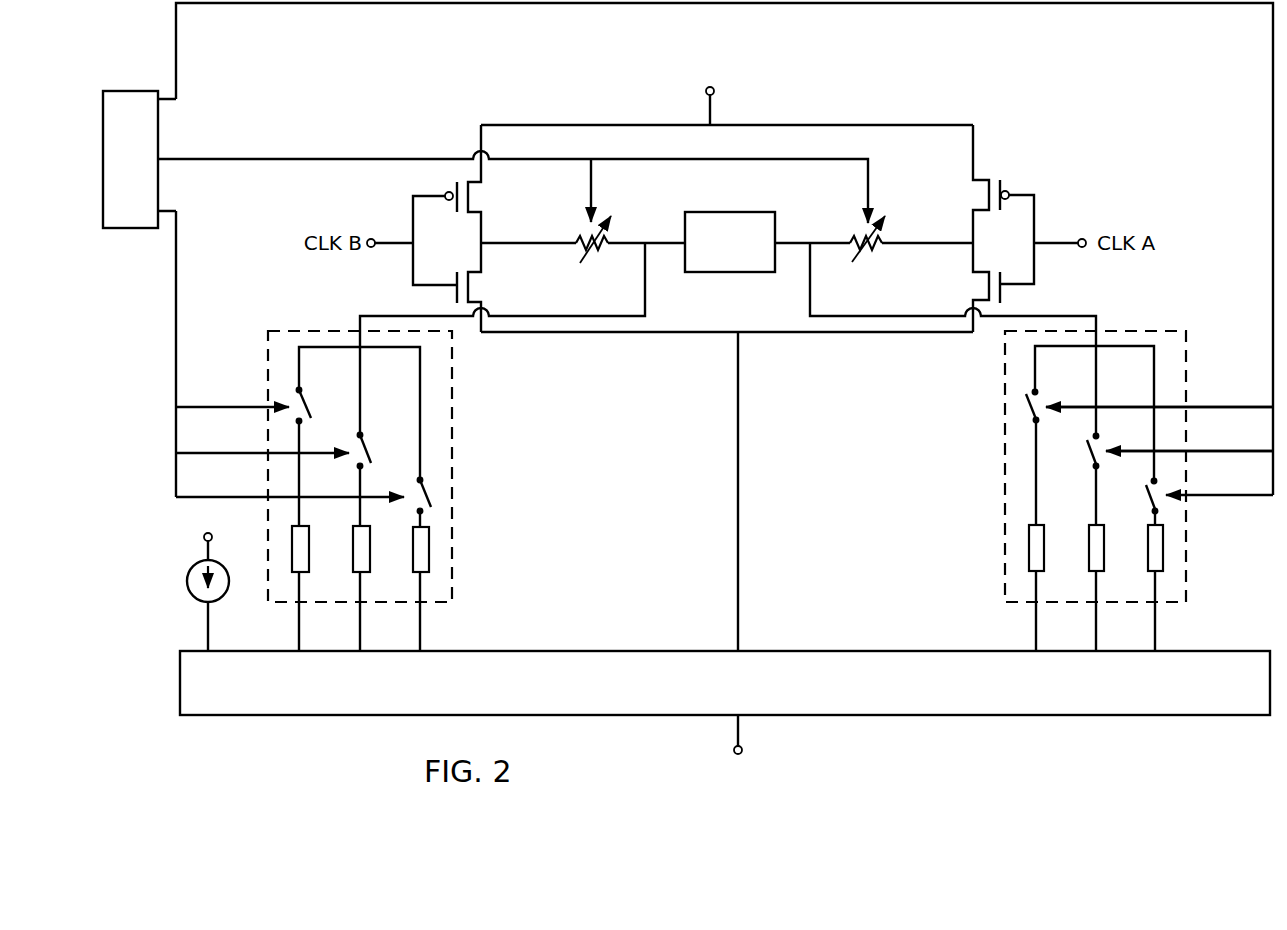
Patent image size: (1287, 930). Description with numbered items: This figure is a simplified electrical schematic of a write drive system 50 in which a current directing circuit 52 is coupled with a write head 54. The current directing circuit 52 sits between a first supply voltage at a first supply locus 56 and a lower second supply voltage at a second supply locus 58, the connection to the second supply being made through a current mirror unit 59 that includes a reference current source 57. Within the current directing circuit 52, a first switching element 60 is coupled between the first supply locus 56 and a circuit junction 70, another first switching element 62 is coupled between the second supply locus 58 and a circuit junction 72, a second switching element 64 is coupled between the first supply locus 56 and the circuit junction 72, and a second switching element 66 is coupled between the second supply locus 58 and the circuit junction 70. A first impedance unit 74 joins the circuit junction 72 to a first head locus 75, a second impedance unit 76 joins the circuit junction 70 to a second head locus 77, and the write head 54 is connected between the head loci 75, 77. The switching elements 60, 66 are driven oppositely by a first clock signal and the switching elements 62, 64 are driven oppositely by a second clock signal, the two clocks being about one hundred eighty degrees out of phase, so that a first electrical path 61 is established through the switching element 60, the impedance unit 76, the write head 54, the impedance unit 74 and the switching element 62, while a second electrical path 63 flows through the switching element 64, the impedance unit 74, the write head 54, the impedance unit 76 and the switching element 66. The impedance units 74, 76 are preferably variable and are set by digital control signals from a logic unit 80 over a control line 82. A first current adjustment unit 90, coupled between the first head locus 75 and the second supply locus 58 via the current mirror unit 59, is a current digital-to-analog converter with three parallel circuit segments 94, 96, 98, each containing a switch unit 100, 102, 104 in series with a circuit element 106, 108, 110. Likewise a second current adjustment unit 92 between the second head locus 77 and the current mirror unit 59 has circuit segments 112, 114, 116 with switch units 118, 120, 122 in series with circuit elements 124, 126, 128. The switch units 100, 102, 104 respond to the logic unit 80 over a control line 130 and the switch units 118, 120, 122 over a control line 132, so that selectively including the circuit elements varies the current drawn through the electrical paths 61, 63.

The write drive system 50 is at (1198, 776).
The current directing circuit 52 is at (1013, 131).
The write head 54 is at (716, 272).
The first supply locus 56 is at (706, 88).
The reference current source 57 is at (192, 570).
The second supply locus 58 is at (745, 750).
The current mirror unit 59 is at (852, 650).
The first switching element 60 is at (990, 180).
The first electrical path 61 is at (959, 167).
The first switching element 62 is at (465, 302).
The second electrical path 63 is at (508, 233).
The second switching element 64 is at (463, 180).
The second switching element 66 is at (1000, 300).
The circuit junction 70 is at (975, 244).
The circuit junction 72 is at (478, 245).
The first impedance unit 74 is at (590, 258).
The first head locus 75 is at (647, 243).
The second impedance unit 76 is at (872, 252).
The second head locus 77 is at (810, 243).
The logic unit 80 is at (158, 137).
The control line 82 is at (336, 158).
The first current adjustment unit 90 is at (452, 420).
The second current adjustment unit 92 is at (1005, 440).
The circuit segment 94 is at (328, 380).
The circuit segment 96 is at (362, 385).
The circuit segment 98 is at (418, 408).
The switch unit 100 is at (307, 398).
The switch unit 102 is at (388, 436).
The switch unit 104 is at (425, 489).
The circuit element 106 is at (327, 525).
The circuit element 108 is at (392, 538).
The circuit element 110 is at (413, 565).
The circuit segment 112 is at (1055, 377).
The circuit segment 114 is at (1097, 379).
The circuit segment 116 is at (1153, 373).
The switch unit 118 is at (1034, 405).
The switch unit 120 is at (1089, 453).
The switch unit 122 is at (1140, 500).
The circuit element 124 is at (1065, 550).
The circuit element 126 is at (1105, 555).
The circuit element 128 is at (1148, 560).
The control line 130 is at (176, 347).
The control line 132 is at (1272, 314).